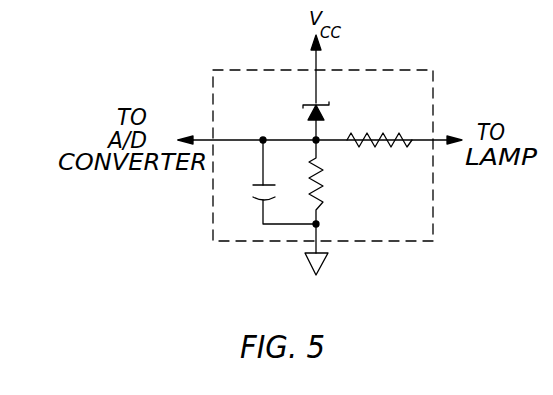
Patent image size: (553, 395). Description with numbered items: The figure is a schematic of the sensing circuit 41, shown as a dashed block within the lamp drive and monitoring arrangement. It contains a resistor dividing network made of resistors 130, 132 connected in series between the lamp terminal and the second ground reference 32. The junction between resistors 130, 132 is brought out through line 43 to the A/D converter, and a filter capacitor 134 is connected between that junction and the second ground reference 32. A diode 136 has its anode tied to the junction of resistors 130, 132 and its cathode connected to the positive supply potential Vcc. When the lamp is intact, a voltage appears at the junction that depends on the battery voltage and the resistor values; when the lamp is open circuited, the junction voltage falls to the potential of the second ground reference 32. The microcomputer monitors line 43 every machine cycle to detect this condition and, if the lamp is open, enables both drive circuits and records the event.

The sensing circuit 41 is at (357, 69).
The line 43 is at (200, 140).
The diode 136 is at (308, 113).
The resistor 130 is at (392, 131).
The resistor 132 is at (322, 186).
The filter capacitor 134 is at (253, 185).
The second ground reference 32 is at (325, 263).